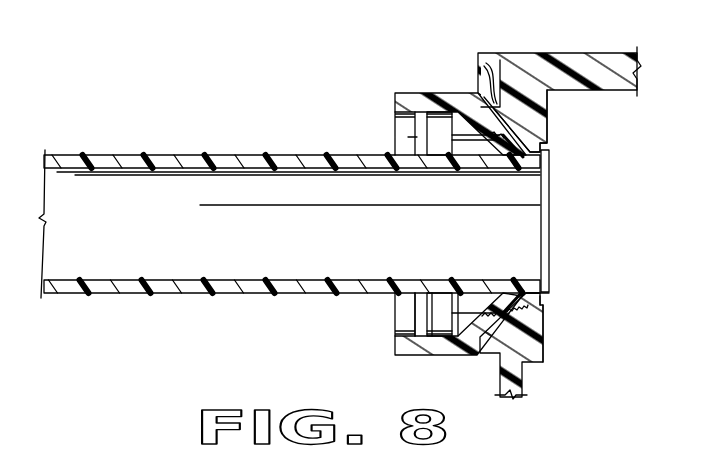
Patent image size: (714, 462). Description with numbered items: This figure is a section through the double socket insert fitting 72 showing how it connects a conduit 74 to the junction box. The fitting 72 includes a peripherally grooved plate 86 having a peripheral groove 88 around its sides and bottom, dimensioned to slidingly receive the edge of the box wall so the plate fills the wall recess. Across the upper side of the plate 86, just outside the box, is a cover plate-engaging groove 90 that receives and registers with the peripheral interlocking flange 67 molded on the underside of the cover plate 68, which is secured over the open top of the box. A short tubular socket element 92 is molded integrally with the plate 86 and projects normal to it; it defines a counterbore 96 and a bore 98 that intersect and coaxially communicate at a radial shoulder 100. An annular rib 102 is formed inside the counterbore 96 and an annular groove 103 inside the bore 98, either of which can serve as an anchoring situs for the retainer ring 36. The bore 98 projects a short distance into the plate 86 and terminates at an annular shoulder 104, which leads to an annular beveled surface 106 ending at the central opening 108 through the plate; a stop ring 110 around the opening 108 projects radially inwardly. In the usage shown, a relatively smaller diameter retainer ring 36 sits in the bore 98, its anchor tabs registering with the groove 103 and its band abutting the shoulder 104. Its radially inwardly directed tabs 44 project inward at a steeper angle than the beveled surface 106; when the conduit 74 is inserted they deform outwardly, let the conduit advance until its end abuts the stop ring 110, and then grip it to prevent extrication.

The conduit 74 is at (185, 156).
The tubular socket element 92 is at (400, 89).
The peripheral interlocking flange 67 is at (476, 83).
The cover plate-engaging groove 90 is at (492, 98).
The peripherally grooved plate 86 is at (520, 113).
The annular shoulder 104 is at (512, 137).
The cover plate 68 is at (616, 99).
The central opening 108 is at (530, 175).
The annular groove 103 is at (474, 128).
The radial shoulder 100 is at (447, 330).
The bore 98 is at (470, 300).
The retainer ring 36 is at (487, 296).
The radially inwardly directed tabs 44 is at (523, 295).
The stop ring 110 is at (540, 292).
The annular beveled surface 106 is at (522, 308).
The annular rib 102 is at (420, 330).
The counterbore 96 is at (393, 333).
The peripheral groove 88 is at (481, 353).
The double socket insert fitting 72 is at (563, 364).